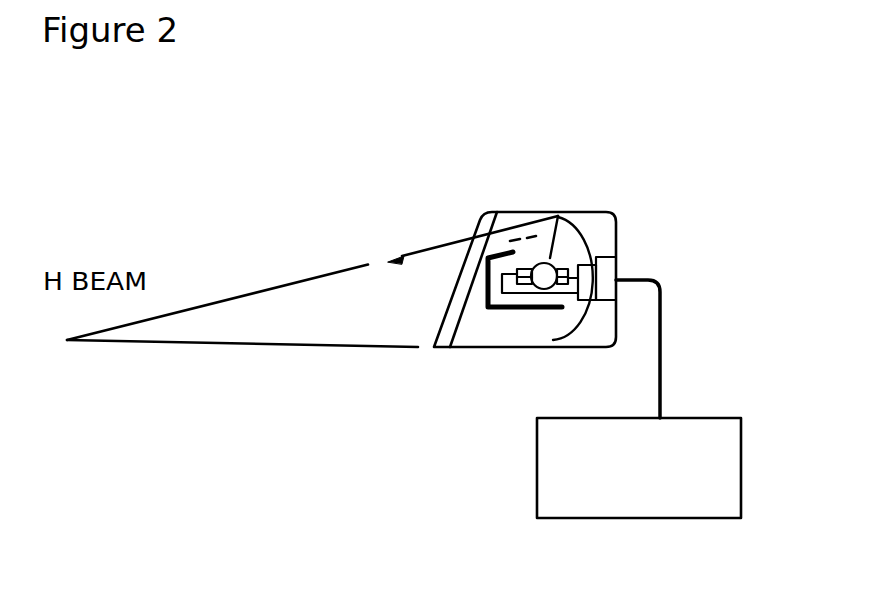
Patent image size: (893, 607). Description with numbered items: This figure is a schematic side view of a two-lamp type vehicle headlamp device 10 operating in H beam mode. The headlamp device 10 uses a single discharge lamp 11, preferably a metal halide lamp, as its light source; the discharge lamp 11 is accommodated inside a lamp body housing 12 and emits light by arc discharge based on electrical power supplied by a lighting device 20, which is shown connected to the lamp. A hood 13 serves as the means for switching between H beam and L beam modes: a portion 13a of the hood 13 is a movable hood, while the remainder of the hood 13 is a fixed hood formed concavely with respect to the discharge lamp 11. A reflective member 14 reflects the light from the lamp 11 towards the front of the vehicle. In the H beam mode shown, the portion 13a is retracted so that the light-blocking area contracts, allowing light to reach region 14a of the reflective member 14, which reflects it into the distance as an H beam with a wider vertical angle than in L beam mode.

The vehicle headlamp device 10 is at (712, 273).
The discharge lamp 11 is at (556, 262).
The lamp body housing 12 is at (617, 243).
The hood 13 is at (483, 300).
The movable hood portion 13a is at (496, 252).
The reflective member 14 is at (584, 320).
The reflective member region 14a is at (577, 255).
The lighting device 20 is at (741, 478).